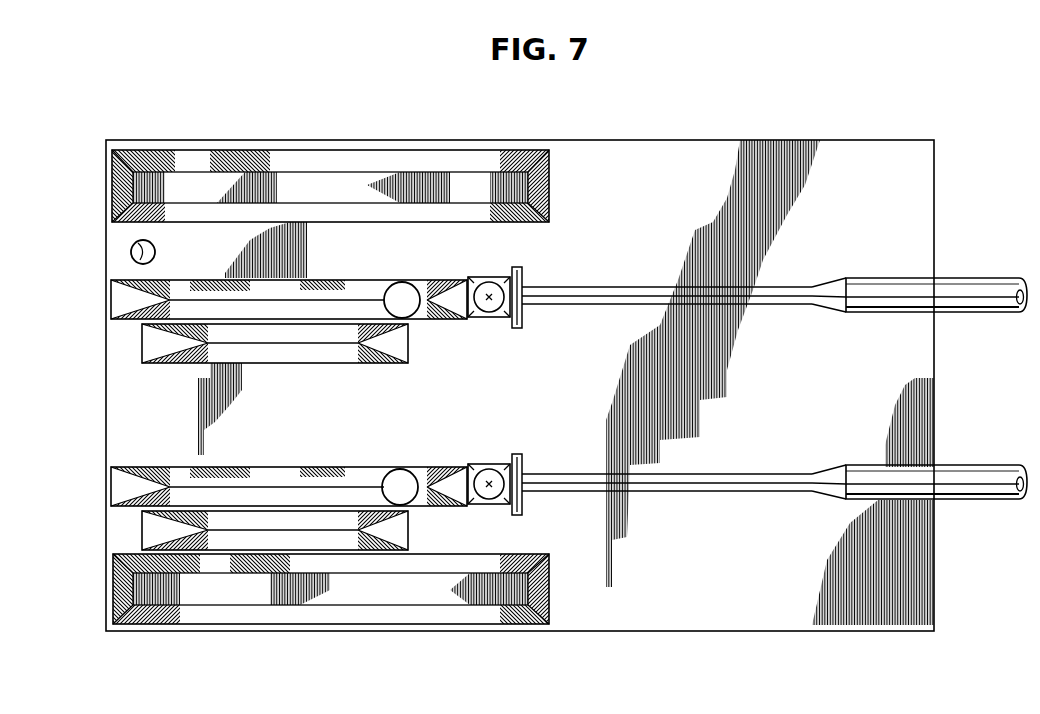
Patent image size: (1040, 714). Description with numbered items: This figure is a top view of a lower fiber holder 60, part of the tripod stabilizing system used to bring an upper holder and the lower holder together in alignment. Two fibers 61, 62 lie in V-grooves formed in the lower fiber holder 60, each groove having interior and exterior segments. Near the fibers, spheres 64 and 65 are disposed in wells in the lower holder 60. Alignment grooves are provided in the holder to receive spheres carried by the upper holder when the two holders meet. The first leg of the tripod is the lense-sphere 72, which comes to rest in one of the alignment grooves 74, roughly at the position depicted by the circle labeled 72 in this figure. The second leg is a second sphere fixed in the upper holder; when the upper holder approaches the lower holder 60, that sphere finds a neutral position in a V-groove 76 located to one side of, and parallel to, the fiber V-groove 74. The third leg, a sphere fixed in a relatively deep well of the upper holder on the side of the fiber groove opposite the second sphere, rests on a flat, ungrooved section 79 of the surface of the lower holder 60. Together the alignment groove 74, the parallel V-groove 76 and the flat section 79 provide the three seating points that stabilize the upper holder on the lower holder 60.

The lower fiber holder 60 is at (934, 171).
The fiber 61 is at (960, 478).
The fiber 62 is at (963, 290).
The sphere 64 is at (492, 474).
The sphere 65 is at (491, 288).
The lense-sphere 72 is at (400, 291).
The alignment groove 74 is at (126, 300).
The V-groove 76 is at (409, 343).
The flat ungrooved section 79 is at (130, 252).